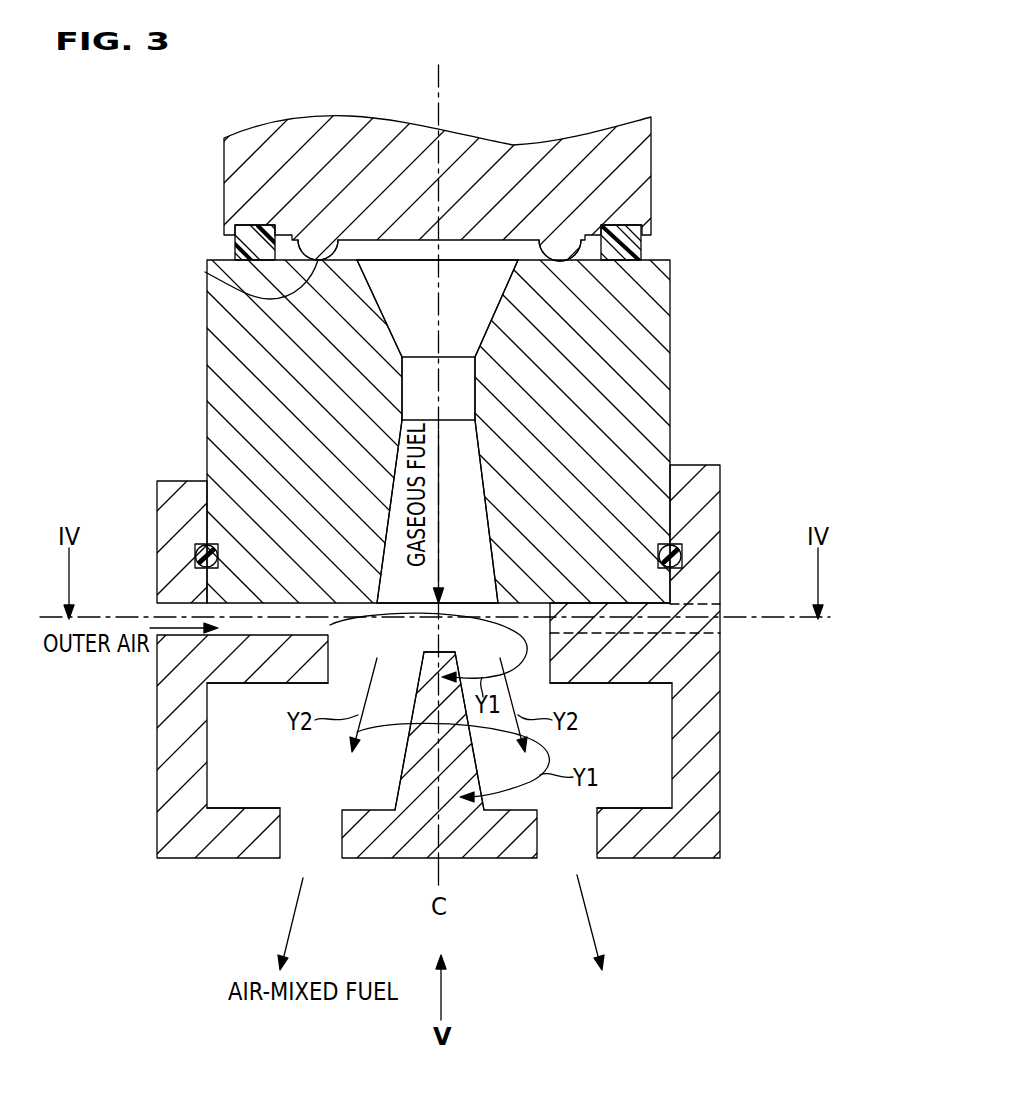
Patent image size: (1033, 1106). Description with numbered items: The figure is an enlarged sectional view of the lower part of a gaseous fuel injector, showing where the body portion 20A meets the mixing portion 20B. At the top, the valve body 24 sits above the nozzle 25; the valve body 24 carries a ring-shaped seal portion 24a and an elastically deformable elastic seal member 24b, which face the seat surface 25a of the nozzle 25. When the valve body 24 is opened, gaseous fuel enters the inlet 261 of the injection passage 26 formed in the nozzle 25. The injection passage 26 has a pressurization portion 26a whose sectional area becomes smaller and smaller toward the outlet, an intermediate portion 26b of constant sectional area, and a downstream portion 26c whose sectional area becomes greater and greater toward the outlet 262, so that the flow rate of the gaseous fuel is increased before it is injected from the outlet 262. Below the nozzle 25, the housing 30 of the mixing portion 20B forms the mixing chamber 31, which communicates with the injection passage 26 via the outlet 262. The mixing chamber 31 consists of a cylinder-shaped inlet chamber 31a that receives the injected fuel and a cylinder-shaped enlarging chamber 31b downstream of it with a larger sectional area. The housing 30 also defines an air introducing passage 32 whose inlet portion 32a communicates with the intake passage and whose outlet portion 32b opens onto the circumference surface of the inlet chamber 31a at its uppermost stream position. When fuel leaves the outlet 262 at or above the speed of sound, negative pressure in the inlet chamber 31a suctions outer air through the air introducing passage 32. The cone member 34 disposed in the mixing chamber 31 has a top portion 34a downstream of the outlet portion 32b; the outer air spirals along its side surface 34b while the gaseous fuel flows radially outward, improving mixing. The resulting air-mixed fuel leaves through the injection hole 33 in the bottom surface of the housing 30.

The body portion 20A is at (150, 355).
The mixing portion 20B is at (145, 882).
The valve body 24 is at (233, 150).
The seal portion 24a is at (322, 253).
The elastic seal member 24b is at (645, 248).
The nozzle 25 is at (242, 308).
The seat surface 25a is at (205, 272).
The injection passage 26 is at (800, 298).
The pressurization portion 26a is at (462, 308).
The intermediate portion 26b is at (462, 378).
The downstream portion 26c is at (463, 523).
The inlet 261 is at (421, 235).
The outlet 262 is at (484, 609).
The housing 30 is at (158, 800).
The mixing chamber 31 is at (796, 680).
The inlet chamber 31a is at (540, 672).
The enlarging chamber 31b is at (627, 757).
The air introducing passage 32 is at (328, 635).
The inlet portion 32a is at (157, 603).
The outlet portion 32b is at (263, 625).
The injection hole 33 is at (322, 847).
The cone member 34 is at (408, 858).
The top portion 34a is at (428, 652).
The side surface 34b is at (413, 708).